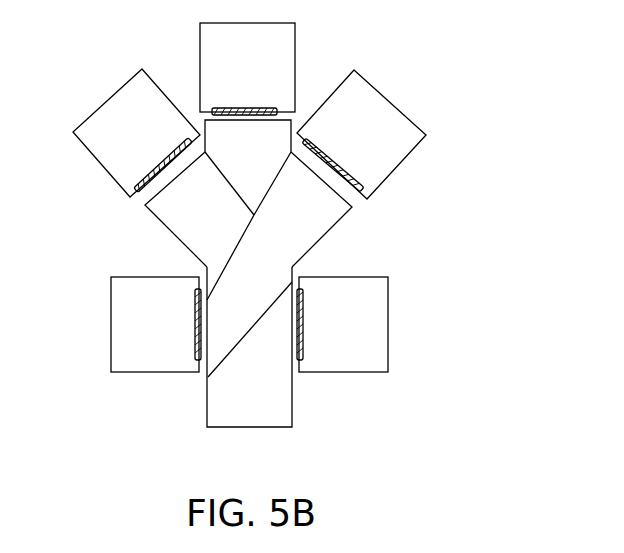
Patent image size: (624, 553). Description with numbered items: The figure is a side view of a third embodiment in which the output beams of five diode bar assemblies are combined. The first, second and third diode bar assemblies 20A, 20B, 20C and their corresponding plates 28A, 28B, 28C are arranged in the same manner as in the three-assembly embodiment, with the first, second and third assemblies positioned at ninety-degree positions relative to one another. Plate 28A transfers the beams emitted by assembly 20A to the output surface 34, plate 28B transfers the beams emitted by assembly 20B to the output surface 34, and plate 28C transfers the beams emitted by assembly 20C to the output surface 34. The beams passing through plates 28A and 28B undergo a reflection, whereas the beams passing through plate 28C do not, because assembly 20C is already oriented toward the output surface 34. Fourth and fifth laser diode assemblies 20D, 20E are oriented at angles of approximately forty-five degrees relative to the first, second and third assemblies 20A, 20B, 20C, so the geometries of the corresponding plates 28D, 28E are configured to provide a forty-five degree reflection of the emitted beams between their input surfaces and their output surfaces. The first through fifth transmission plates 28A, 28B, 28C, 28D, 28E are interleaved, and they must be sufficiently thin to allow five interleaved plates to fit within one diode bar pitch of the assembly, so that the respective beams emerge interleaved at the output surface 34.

The first diode bar assembly 20A is at (149, 372).
The second diode bar assembly 20B is at (350, 372).
The third diode bar assembly 20C is at (295, 46).
The fourth laser diode assembly 20D is at (103, 108).
The fifth laser diode assembly 20E is at (394, 107).
The first transmission plate 28A is at (214, 281).
The second transmission plate 28B is at (249, 347).
The third transmission plate 28C is at (268, 155).
The fourth transmission plate 28D is at (220, 215).
The fifth transmission plate 28E is at (320, 215).
The output surface 34 is at (246, 299).